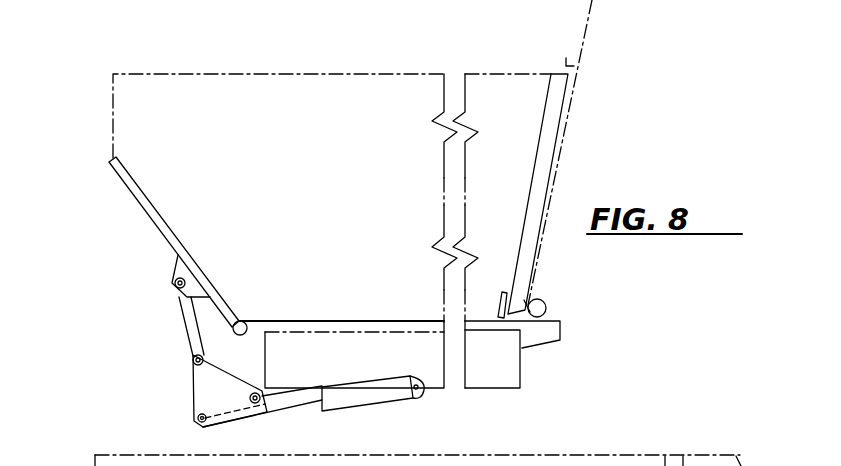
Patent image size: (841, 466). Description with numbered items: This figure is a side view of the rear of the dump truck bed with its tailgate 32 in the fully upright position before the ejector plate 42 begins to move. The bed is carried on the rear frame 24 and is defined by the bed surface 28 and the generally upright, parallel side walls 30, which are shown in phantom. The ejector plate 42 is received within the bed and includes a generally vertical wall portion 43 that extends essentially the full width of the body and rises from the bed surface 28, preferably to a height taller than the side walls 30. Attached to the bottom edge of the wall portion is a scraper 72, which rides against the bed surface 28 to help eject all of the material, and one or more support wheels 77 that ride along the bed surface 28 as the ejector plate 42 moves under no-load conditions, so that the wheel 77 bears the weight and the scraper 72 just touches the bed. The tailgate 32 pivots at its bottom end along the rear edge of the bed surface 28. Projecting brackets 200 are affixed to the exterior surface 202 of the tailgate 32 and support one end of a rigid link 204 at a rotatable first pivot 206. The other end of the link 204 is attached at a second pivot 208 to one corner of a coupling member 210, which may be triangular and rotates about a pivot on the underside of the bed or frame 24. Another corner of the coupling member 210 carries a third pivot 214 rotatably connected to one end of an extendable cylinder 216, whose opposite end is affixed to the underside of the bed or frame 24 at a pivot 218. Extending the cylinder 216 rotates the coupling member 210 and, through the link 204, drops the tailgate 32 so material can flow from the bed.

The side walls 30 is at (343, 124).
The bed surface 28 is at (321, 320).
The tailgate 32 is at (147, 246).
The exterior surface 202 is at (135, 195).
The projecting brackets 200 is at (283, 359).
The first pivot 206 is at (172, 290).
The rigid link 204 is at (179, 322).
The second pivot 208 is at (192, 364).
The coupling member 210 is at (205, 405).
The third pivot 214 is at (205, 424).
The extendable cylinder 216 is at (350, 400).
The pivot 218 is at (421, 396).
The rear frame 24 is at (521, 366).
The ejector plate 42 is at (565, 159).
The vertical wall portion 43 is at (536, 172).
The scraper 72 is at (497, 314).
The support wheels 77 is at (545, 306).